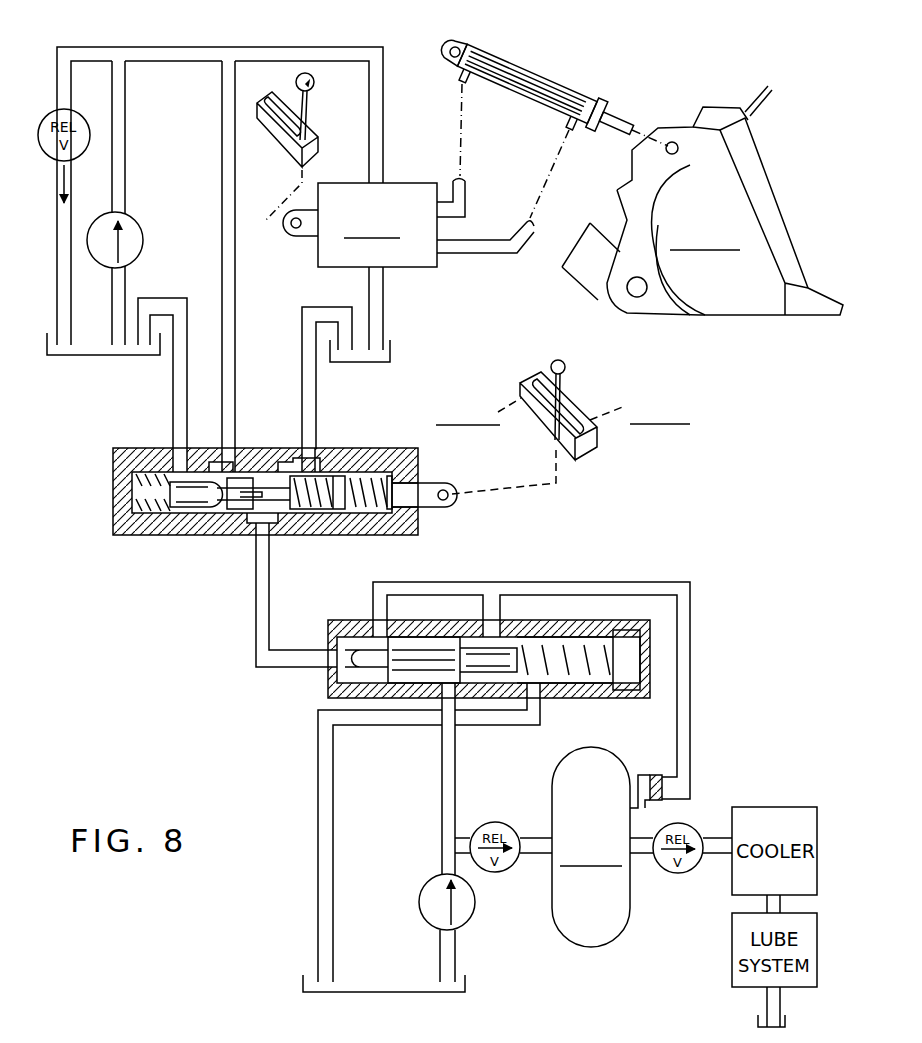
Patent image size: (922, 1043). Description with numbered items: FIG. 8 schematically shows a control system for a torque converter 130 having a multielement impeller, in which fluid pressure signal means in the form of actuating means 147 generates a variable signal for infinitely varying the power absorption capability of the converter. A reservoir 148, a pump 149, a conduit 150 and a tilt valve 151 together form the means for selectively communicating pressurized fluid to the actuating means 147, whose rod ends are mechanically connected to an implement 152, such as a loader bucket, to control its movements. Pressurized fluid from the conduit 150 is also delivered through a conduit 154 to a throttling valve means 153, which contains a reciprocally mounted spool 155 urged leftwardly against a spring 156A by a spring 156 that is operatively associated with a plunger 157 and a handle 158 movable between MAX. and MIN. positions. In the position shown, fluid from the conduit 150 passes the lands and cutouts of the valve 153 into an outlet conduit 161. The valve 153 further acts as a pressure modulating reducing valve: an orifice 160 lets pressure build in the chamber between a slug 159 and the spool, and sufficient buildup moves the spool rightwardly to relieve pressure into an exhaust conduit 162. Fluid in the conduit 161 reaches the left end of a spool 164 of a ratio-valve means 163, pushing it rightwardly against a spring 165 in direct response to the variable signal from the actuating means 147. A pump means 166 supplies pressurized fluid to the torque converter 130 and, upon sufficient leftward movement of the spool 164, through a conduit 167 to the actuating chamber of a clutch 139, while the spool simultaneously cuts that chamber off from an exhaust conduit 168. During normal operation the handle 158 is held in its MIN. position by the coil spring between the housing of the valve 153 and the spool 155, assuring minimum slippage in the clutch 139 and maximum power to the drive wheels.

The torque converter 130 is at (591, 847).
The clutch 139 is at (645, 771).
The actuating means 147 is at (564, 74).
The reservoir 148 is at (97, 357).
The pump 149 is at (133, 230).
The conduit 150 is at (289, 47).
The tilt valve 151 is at (395, 170).
The implement 152 is at (702, 200).
The throttling valve means 153 is at (103, 504).
The conduit 154 is at (235, 276).
The spool 155 is at (262, 486).
The spring 156 is at (337, 488).
The spring 156A is at (114, 475).
The plunger 157 is at (378, 508).
The handle 158 is at (566, 362).
The piston 159 is at (175, 514).
The orifice 160 is at (238, 494).
The outlet conduit 161 is at (269, 558).
The exhaust conduit 162 is at (314, 378).
The valve 163 is at (318, 687).
The spool 164 is at (362, 655).
The spring 165 is at (583, 678).
The pump means 166 is at (466, 911).
The conduit 167 is at (690, 644).
The exhaust conduit 168 is at (318, 925).